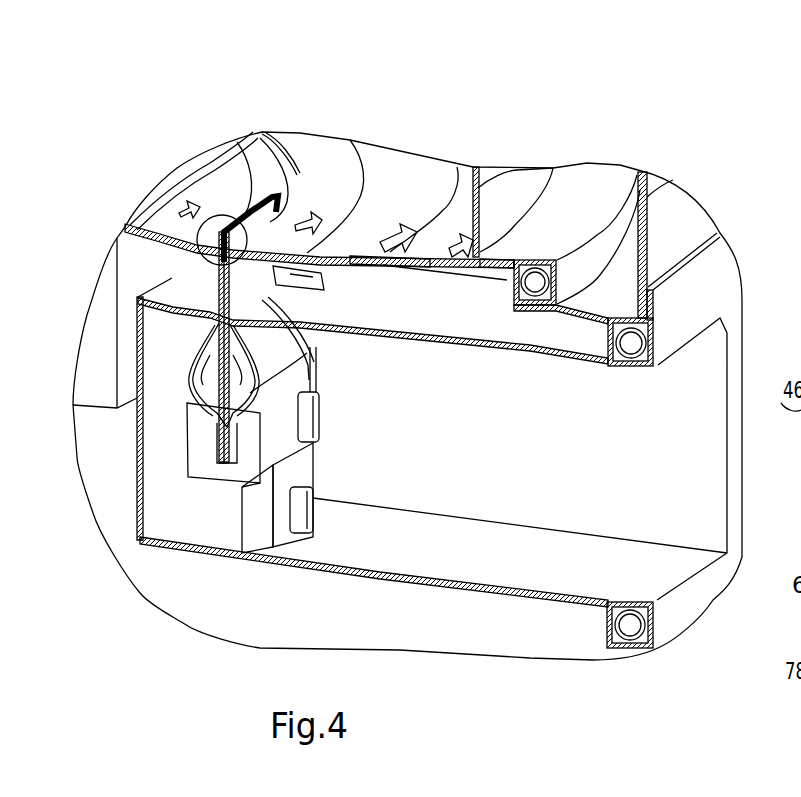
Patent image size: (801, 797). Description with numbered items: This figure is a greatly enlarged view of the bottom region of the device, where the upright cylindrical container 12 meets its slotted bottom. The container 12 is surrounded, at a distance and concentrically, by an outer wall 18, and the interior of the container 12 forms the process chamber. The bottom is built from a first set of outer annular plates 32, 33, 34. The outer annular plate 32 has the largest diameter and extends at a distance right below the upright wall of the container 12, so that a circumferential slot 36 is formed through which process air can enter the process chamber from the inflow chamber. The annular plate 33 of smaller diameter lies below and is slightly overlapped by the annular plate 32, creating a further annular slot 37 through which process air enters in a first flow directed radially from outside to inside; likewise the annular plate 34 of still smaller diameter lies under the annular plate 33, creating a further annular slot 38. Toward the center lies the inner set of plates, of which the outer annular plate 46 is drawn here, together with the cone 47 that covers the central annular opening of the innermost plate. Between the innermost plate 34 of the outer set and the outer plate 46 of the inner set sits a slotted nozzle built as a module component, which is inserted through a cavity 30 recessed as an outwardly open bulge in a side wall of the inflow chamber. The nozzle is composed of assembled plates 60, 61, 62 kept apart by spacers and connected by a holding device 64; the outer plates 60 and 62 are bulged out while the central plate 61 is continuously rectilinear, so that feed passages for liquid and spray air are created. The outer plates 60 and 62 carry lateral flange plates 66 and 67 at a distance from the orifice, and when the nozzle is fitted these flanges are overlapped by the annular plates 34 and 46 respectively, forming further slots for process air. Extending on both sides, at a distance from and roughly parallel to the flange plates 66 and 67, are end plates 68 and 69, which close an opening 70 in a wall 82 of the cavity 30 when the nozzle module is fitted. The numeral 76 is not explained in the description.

The container 12 is at (500, 180).
The outer wall 18 is at (673, 180).
The cavity 30 is at (653, 463).
The outer annular plate 32 is at (467, 173).
The annular plate 33 is at (410, 170).
The annular plate 34 is at (340, 148).
The circumferential slot 36 is at (463, 267).
The annular slot 37 is at (383, 264).
The annular slot 38 is at (317, 267).
The annular plate 46 is at (223, 177).
The cone 47 is at (168, 195).
The outer plate 60 is at (188, 412).
The central plate 61 is at (205, 468).
The outer plate 62 is at (319, 418).
The holding device 64 is at (138, 542).
The lateral flange plate 66 is at (217, 273).
The lateral flange plate 67 is at (320, 327).
The end plate 68 is at (197, 315).
The end plate 69 is at (310, 340).
The opening 70 is at (215, 288).
The rail plate 76 is at (367, 340).
The wall 82 is at (578, 365).